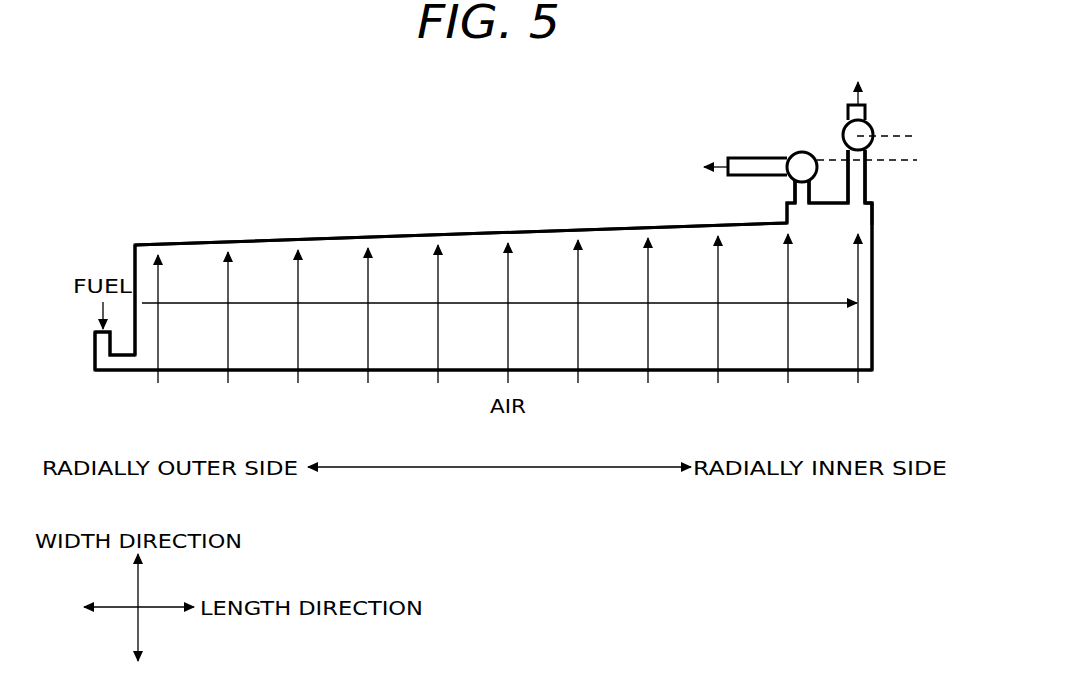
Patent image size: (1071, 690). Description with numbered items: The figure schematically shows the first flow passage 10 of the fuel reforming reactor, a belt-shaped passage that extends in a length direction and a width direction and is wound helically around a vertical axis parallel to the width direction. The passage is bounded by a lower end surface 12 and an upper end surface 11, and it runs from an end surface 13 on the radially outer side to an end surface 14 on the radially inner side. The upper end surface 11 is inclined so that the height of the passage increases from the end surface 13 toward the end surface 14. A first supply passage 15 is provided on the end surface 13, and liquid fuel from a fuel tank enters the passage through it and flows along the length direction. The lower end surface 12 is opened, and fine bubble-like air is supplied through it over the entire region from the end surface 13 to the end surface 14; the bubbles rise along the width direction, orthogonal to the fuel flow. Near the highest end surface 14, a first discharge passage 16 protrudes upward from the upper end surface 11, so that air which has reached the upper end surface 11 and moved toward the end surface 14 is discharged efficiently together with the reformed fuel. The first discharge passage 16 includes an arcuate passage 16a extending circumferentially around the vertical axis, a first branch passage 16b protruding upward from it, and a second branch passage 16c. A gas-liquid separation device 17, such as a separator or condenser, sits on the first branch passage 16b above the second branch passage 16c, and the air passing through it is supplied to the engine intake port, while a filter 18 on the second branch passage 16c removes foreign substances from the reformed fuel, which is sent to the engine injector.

The first flow passage 10 is at (370, 228).
The upper end surface 11 is at (455, 233).
The lower end surface 12 is at (700, 372).
The end surface on a radially outer side 13 is at (133, 262).
The end surface on a radially inner side 14 is at (873, 262).
The first supply passage 15 is at (95, 348).
The first discharge passage 16 is at (785, 207).
The arcuate passage 16a is at (875, 215).
The first branch passage 16b is at (868, 185).
The second branch passage 16c is at (792, 190).
The gas-liquid separation device 17 is at (872, 128).
The filter 18 is at (800, 153).